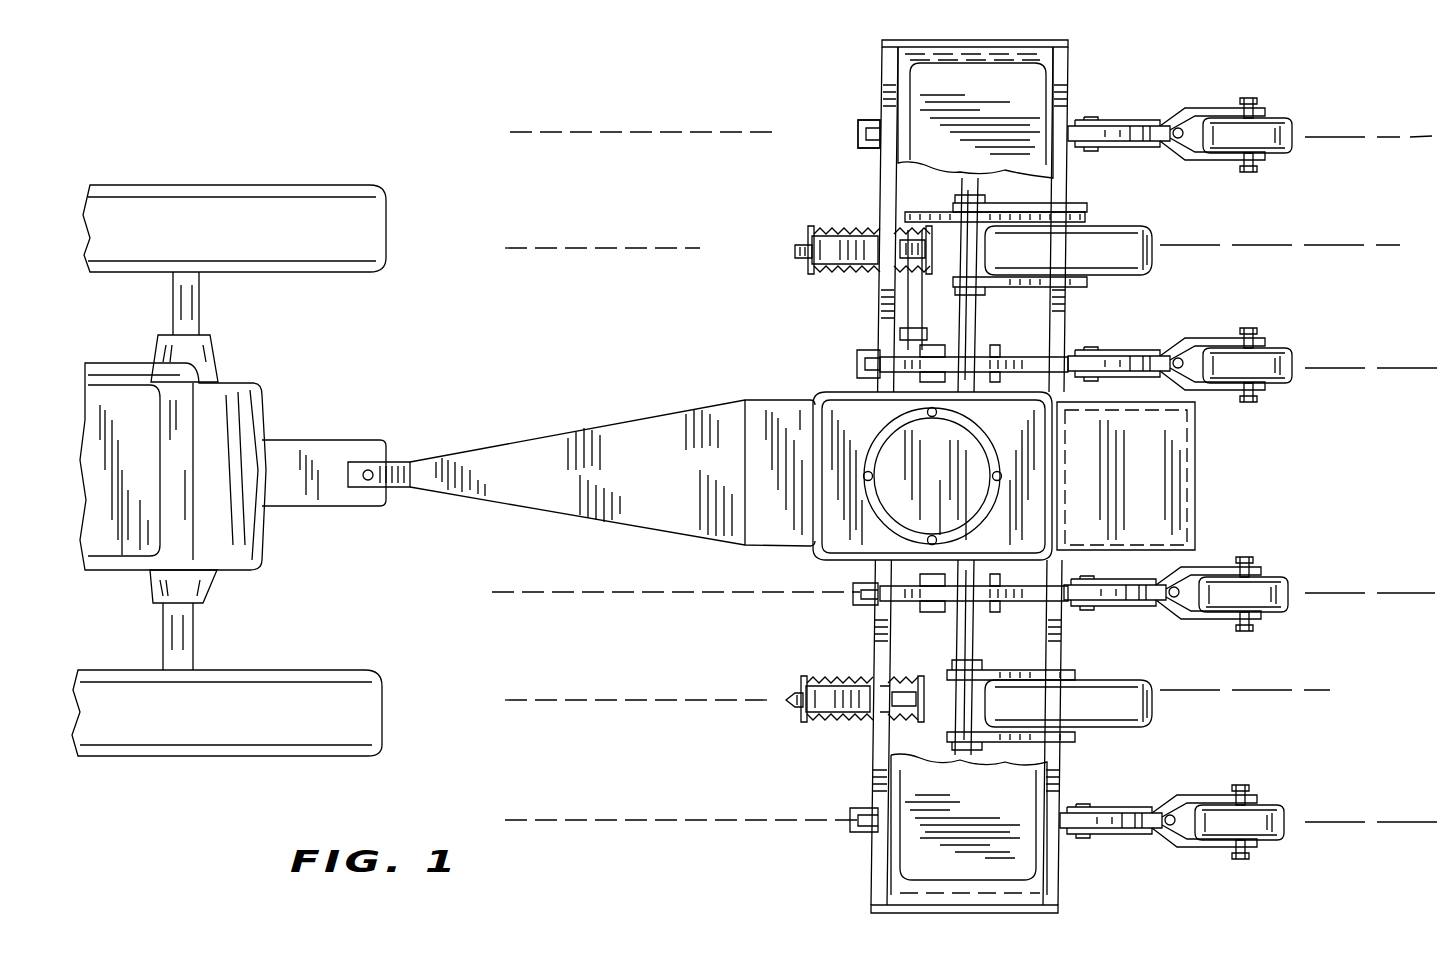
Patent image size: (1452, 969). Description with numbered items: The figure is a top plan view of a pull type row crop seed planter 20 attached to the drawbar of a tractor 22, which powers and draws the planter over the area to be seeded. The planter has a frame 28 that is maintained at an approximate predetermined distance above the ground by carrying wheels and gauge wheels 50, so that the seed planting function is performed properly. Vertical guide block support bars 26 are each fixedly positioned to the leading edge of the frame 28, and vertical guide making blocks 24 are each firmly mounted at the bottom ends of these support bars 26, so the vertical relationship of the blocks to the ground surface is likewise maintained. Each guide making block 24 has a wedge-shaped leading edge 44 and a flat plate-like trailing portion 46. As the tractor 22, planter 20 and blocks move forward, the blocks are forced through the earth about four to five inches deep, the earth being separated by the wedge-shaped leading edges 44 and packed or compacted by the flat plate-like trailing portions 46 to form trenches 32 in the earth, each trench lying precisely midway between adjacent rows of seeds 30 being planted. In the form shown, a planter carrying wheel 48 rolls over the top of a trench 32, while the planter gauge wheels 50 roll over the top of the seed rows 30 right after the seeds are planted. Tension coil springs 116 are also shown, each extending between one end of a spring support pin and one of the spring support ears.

The pull type planter 20 is at (1090, 88).
The tractor 22 is at (282, 392).
The guide making block 24 is at (800, 250).
The guide block support bar 26 is at (866, 232).
The frame 28 is at (880, 96).
The rows of seeds 30 is at (1372, 137).
The trench 32 is at (1370, 258).
The wedge-shaped leading edge 44 is at (788, 700).
The flat plate-like trailing portion 46 is at (806, 242).
The planter carrying wheel 48 is at (1112, 232).
The gauge wheel 50 is at (1280, 135).
The tension coil spring 116 is at (866, 270).